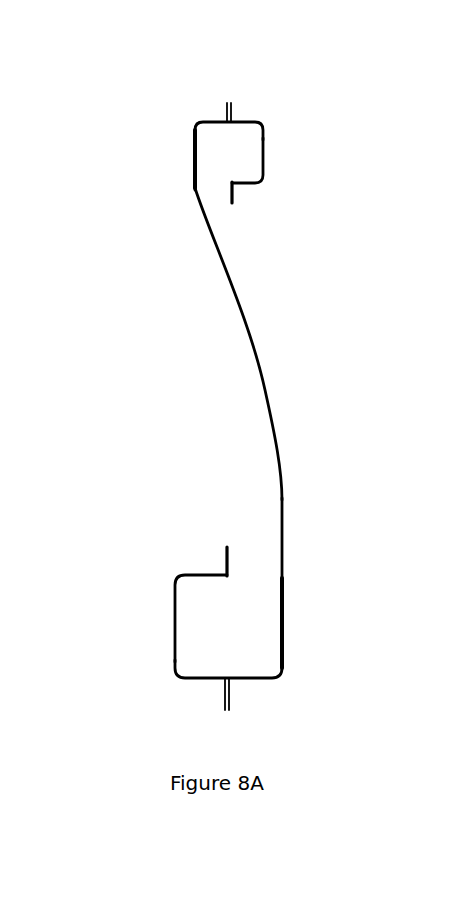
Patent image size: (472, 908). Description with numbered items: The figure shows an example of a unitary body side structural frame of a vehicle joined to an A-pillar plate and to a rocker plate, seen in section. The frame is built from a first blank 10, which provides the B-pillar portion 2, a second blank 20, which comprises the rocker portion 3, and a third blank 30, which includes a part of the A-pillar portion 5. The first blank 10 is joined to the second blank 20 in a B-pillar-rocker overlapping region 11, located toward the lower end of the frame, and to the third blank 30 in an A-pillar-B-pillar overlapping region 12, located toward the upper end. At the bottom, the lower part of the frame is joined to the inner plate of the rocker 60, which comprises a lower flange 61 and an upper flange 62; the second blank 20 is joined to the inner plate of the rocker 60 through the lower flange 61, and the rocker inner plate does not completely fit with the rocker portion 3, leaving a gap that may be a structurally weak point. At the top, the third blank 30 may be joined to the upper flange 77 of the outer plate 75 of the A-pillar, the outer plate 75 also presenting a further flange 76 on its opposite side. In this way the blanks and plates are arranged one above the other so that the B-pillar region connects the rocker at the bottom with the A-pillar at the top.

The B-pillar portion 2 is at (202, 398).
The rocker portion 3 is at (338, 673).
The A-pillar portion 5 is at (150, 148).
The first blank 10 is at (273, 425).
The B-pillar-rocker overlapping region 11 is at (285, 637).
The A-pillar-B-pillar overlapping region 12 is at (193, 155).
The second blank 20 is at (248, 682).
The third blank 30 is at (208, 119).
The inner plate of the rocker 60 is at (172, 628).
The lower flange 61 is at (222, 695).
The upper flange 62 is at (225, 560).
The outer plate of the A-pillar 75 is at (263, 148).
The return flange 76 is at (233, 203).
The upper flange of the outer plate of the A-pillar 77 is at (233, 108).